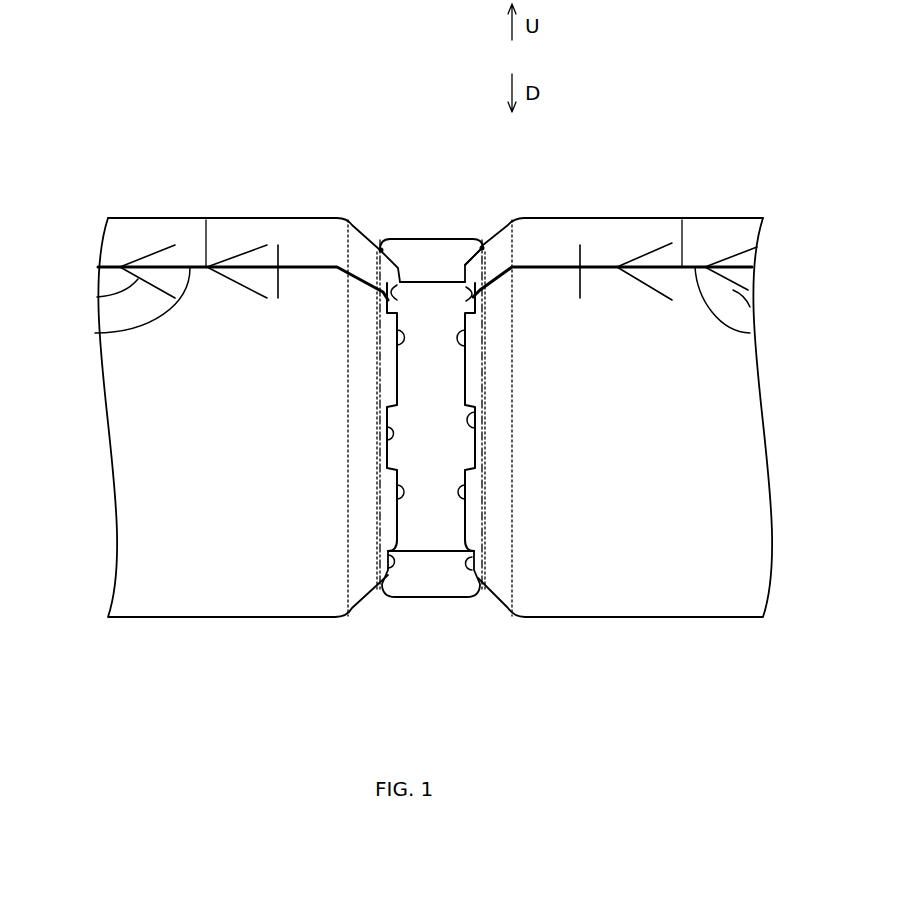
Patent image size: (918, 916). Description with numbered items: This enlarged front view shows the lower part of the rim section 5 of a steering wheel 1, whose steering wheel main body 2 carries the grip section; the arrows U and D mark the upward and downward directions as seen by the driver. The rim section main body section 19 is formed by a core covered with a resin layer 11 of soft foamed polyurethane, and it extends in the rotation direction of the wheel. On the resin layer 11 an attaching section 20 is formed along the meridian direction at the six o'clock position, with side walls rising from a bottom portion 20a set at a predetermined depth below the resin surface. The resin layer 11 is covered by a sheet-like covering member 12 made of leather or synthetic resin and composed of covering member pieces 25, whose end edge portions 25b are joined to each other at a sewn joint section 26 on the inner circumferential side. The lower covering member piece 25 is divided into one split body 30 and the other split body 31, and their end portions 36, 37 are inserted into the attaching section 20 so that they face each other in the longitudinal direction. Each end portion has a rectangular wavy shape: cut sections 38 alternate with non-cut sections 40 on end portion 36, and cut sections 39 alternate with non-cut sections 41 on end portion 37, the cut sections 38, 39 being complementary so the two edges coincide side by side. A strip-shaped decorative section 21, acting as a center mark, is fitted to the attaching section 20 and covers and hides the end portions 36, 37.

The steering wheel 1 is at (586, 145).
The steering wheel main body 2 is at (615, 211).
The rim section 5 is at (690, 617).
The resin layer 11 is at (429, 547).
The covering member 12 is at (203, 617).
The rim section main body section 19 is at (466, 449).
The attaching section 20 is at (407, 278).
The bottom portion 20a is at (433, 280).
The decorative section 21 is at (463, 240).
The covering member piece 25 is at (143, 218).
The end edge portion 25b is at (208, 218).
The joint section 26 is at (97, 297).
The one split body 30 is at (112, 366).
The other split body 31 is at (745, 366).
The end portion 36 is at (405, 555).
The end portion 37 is at (455, 555).
The cut section 38 is at (398, 340).
The cut section 39 is at (462, 345).
The non-cut section 40 is at (380, 249).
The non-cut section 41 is at (487, 244).